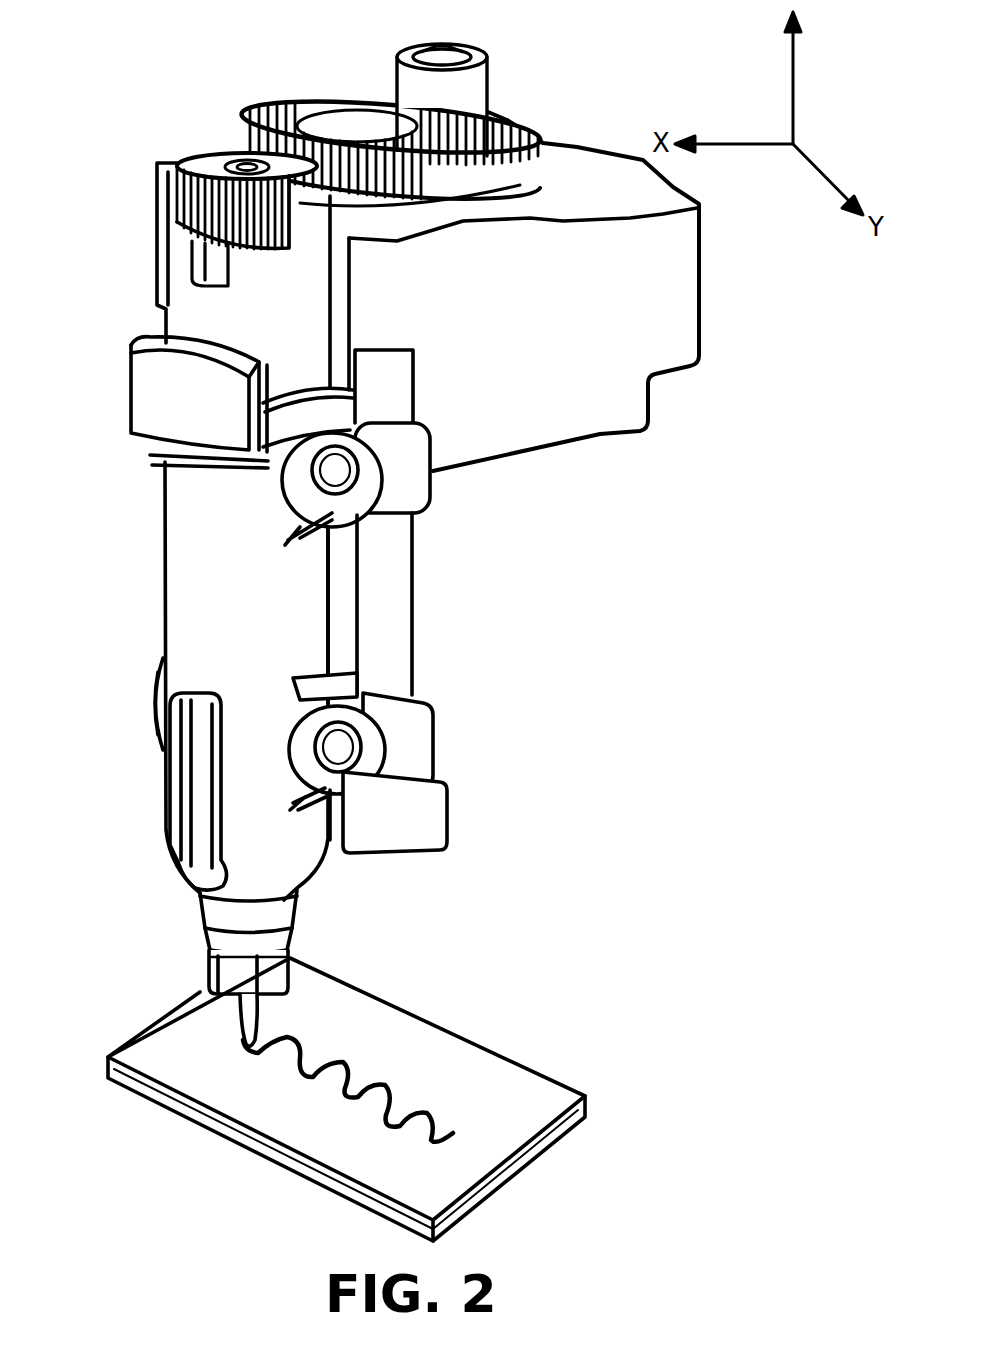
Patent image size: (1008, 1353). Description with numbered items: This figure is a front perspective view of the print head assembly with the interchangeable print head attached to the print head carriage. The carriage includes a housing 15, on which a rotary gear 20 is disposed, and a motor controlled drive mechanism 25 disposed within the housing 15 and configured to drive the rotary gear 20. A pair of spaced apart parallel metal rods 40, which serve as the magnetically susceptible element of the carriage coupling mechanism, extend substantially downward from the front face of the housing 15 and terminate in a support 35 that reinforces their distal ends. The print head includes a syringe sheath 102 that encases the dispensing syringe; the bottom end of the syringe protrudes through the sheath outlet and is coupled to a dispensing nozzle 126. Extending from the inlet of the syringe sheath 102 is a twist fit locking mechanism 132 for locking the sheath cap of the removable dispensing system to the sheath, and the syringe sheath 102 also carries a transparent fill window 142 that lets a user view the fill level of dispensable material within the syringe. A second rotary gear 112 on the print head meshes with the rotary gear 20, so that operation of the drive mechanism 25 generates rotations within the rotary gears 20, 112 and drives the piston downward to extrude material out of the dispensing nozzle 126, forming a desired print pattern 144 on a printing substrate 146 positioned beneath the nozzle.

The housing 15 is at (565, 408).
The rotary gear 20 is at (345, 132).
The motor controlled drive mechanism 25 is at (452, 95).
The support 35 is at (397, 828).
The metal rods 40 is at (393, 610).
The syringe sheath 102 is at (165, 590).
The rotary gear 112 is at (218, 168).
The dispensing nozzle 126 is at (233, 1003).
The locking mechanism 132 is at (160, 418).
The transparent fill window 142 is at (197, 790).
The print pattern 144 is at (352, 1055).
The printing substrate 146 is at (480, 1085).